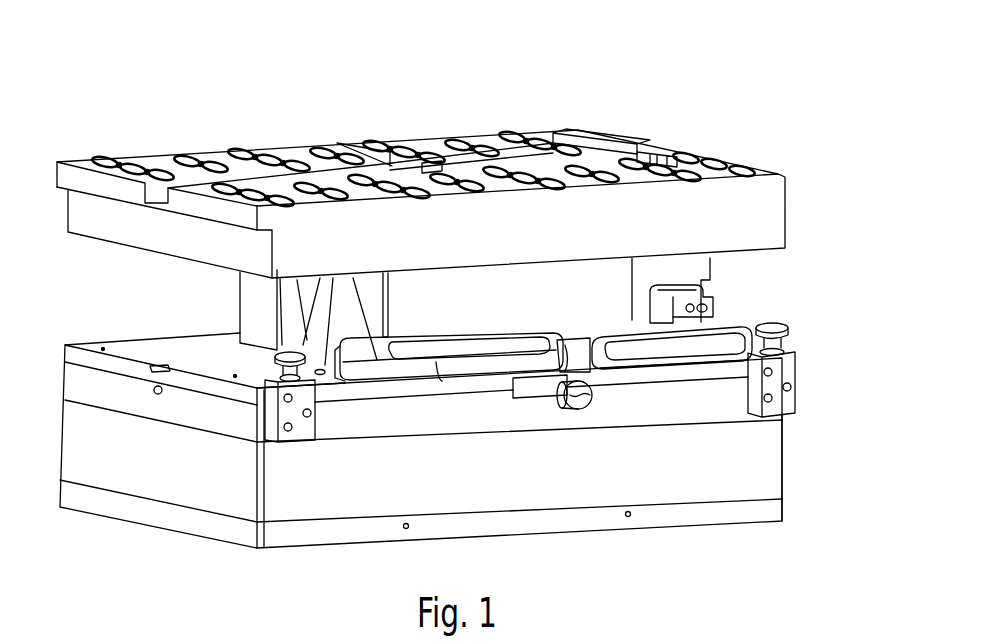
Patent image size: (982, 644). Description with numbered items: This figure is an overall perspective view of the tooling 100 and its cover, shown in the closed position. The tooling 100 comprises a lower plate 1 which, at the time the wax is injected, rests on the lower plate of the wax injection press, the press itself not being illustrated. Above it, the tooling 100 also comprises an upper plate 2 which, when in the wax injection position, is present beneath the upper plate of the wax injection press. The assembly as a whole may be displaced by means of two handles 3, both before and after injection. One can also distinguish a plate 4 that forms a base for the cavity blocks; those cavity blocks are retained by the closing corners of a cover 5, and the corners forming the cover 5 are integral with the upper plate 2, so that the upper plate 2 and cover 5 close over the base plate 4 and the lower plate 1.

The tooling 100 is at (523, 116).
The lower plate 1 is at (764, 450).
The upper plate 2 is at (220, 153).
The handles 3 is at (740, 330).
The plate 4 is at (122, 343).
The cover 5 is at (240, 291).